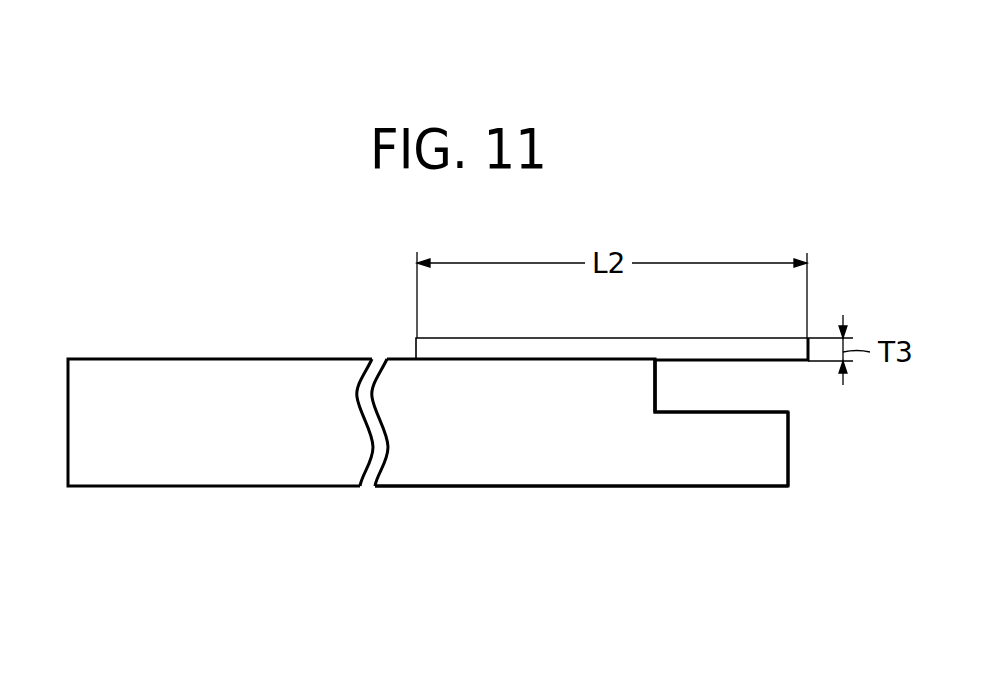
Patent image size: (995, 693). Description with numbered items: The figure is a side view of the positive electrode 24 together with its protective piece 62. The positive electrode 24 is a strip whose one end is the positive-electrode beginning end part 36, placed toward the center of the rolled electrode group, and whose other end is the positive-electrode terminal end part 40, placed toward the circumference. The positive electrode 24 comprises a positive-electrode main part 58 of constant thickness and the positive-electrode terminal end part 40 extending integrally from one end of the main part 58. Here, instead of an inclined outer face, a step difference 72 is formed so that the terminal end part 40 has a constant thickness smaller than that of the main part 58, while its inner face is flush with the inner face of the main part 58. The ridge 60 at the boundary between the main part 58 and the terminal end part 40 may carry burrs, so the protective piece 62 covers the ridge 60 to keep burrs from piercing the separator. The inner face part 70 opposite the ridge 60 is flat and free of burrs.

The positive electrode 24 is at (580, 546).
The positive-electrode beginning end part 36 is at (92, 464).
The positive-electrode main part 58 is at (413, 462).
The protective piece 62 is at (522, 353).
The ridge 60 is at (657, 358).
The step difference 72 is at (655, 387).
The inner face part 70 is at (673, 486).
The positive-electrode terminal end part 40 is at (760, 467).